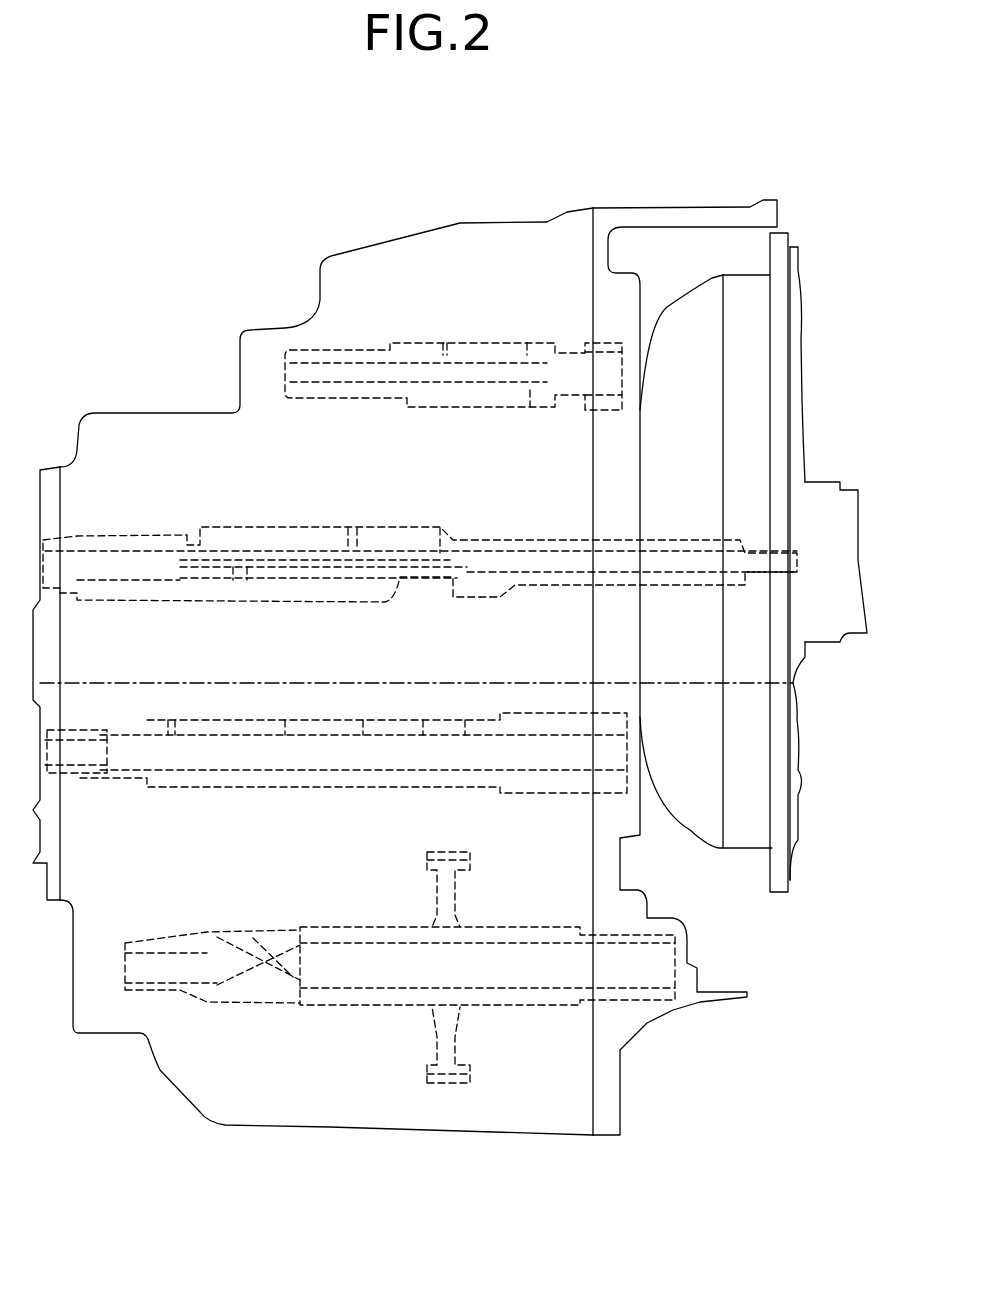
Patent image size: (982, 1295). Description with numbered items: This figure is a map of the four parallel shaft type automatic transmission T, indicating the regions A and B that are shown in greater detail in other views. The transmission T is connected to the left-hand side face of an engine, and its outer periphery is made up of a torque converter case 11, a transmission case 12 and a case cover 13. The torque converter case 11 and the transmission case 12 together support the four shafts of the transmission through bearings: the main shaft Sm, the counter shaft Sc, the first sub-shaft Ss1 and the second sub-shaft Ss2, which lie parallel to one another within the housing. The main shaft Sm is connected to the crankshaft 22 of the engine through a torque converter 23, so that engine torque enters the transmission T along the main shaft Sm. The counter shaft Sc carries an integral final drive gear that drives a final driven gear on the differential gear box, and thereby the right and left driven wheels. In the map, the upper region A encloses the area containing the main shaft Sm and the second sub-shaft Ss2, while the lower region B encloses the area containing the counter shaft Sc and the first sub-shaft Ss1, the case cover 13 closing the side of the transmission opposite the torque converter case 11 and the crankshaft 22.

The four parallel shaft type automatic transmission T is at (307, 263).
The torque converter case 11 is at (658, 215).
The transmission case 12 is at (388, 257).
The case cover 13 is at (50, 483).
The crankshaft 22 is at (820, 500).
The torque converter 23 is at (667, 309).
The second sub-shaft Ss2 is at (382, 342).
The main shaft Sm is at (305, 525).
The counter shaft Sc is at (343, 717).
The first sub-shaft Ss1 is at (477, 930).
The upper region A is at (358, 479).
The lower region B is at (361, 855).